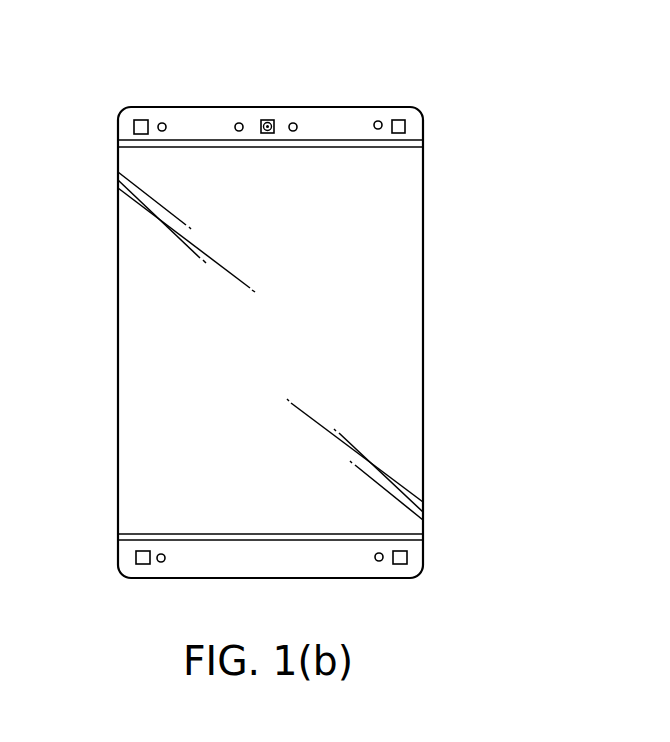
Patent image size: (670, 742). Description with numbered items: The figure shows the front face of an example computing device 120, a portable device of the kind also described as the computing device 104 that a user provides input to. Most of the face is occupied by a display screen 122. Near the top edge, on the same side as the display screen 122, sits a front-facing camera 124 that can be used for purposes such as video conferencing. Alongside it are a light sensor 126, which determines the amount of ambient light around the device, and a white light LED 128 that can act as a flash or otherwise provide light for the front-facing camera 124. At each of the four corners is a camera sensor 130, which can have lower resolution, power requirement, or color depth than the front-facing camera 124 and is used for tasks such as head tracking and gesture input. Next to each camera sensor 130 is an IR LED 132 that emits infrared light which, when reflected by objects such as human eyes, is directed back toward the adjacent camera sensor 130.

The computing device 104 is at (120, 310).
The computing device 120 is at (588, 152).
The display screen 122 is at (120, 228).
The front-facing camera 124 is at (267, 119).
The light sensor 126 is at (238, 122).
The white light LED 128 is at (295, 122).
The camera sensor 130 is at (137, 119).
The IR LED 132 is at (162, 122).